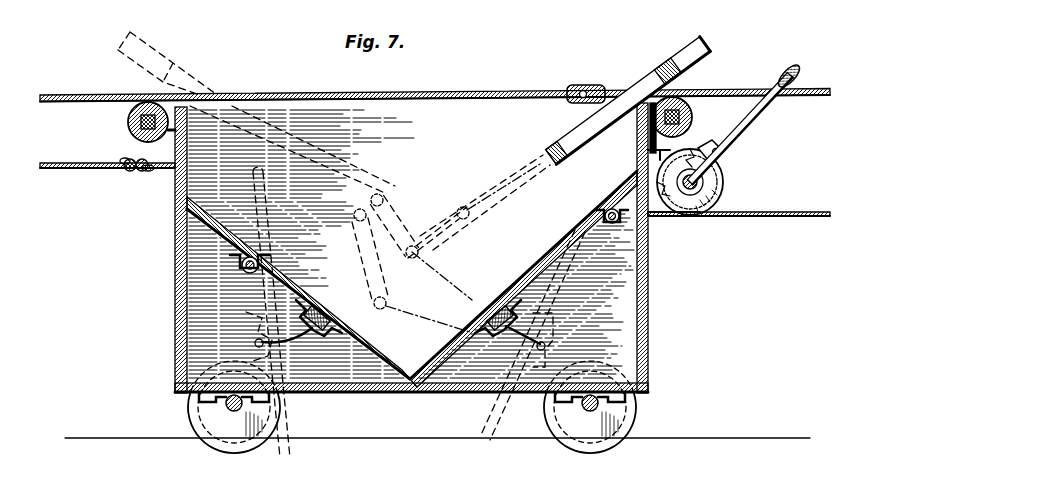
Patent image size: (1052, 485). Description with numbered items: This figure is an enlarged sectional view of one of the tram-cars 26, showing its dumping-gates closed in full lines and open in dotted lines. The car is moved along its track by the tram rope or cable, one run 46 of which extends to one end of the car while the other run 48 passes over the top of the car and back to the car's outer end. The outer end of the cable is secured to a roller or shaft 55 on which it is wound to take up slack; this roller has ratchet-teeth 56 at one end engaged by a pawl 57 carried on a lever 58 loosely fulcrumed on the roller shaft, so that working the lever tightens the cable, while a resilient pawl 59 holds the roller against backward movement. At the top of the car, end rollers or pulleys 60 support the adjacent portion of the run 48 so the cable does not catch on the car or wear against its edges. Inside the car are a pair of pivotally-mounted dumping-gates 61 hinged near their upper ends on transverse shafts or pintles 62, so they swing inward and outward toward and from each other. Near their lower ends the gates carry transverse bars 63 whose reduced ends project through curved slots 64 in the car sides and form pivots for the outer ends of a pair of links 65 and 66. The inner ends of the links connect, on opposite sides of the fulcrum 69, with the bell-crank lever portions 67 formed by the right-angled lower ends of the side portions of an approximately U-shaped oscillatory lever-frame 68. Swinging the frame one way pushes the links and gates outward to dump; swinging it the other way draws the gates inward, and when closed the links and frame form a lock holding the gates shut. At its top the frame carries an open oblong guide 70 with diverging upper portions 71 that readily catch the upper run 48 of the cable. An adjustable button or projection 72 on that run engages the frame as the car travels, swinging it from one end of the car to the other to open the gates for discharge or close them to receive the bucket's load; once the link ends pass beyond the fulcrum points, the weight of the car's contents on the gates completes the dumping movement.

The tram-car 26 is at (392, 278).
The run of the tram rope or cable 46 is at (75, 170).
The run of the tram rope or cable 48 is at (396, 95).
The roller or shaft 55 is at (692, 217).
The ratchet-teeth 56 is at (722, 193).
The pawl 57 is at (700, 145).
The lever 58 is at (745, 123).
The resilient pawl 59 is at (667, 212).
The end rollers or pulleys 60 is at (132, 136).
The dumping-gates 61 is at (562, 248).
The transverse shafts or pintles 62 is at (263, 265).
The transverse bars 63 is at (325, 306).
The curved slots 64 is at (292, 338).
The link 65 is at (438, 270).
The link 66 is at (375, 272).
The bell-crank lever portions 67 is at (397, 213).
The oscillatory lever-frame 68 is at (218, 90).
The fulcrum 69 is at (446, 250).
The open oblong guide 70 is at (566, 153).
The diverging upper portions 71 is at (684, 54).
The adjustable button or projection 72 is at (574, 103).